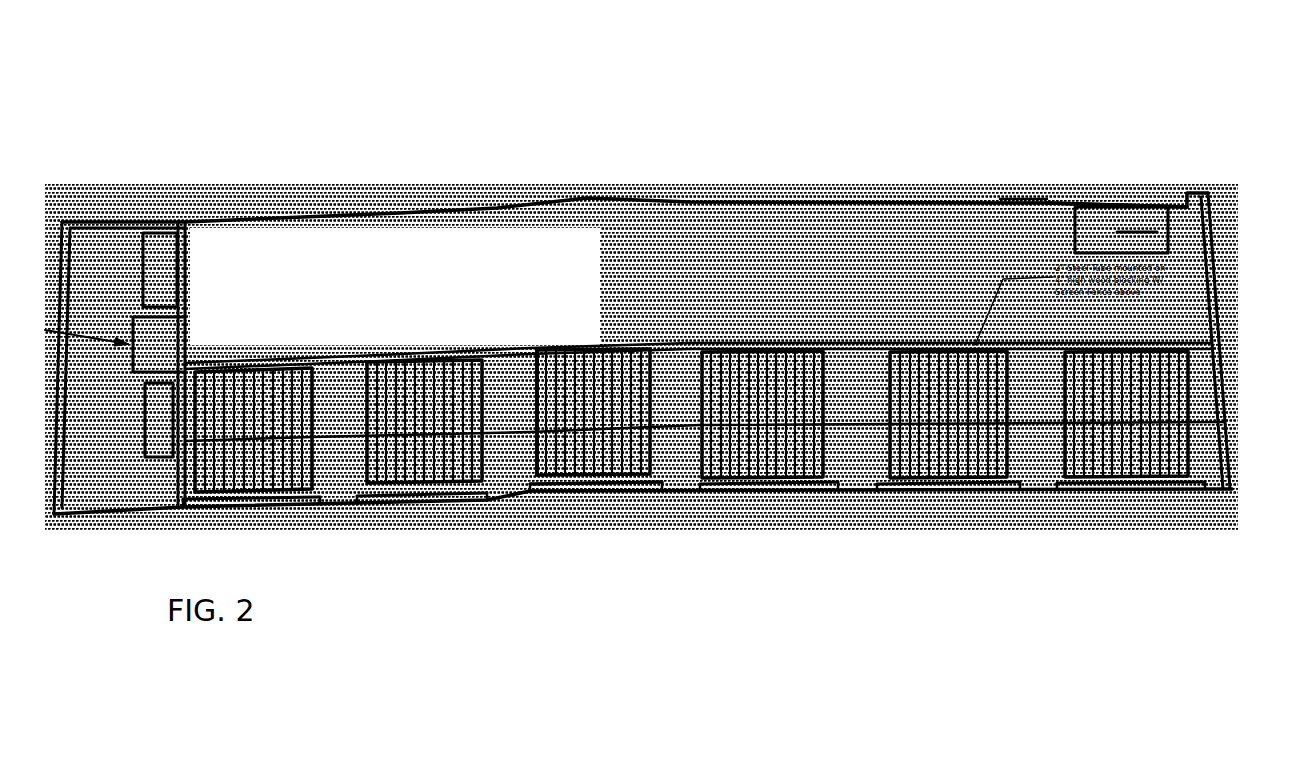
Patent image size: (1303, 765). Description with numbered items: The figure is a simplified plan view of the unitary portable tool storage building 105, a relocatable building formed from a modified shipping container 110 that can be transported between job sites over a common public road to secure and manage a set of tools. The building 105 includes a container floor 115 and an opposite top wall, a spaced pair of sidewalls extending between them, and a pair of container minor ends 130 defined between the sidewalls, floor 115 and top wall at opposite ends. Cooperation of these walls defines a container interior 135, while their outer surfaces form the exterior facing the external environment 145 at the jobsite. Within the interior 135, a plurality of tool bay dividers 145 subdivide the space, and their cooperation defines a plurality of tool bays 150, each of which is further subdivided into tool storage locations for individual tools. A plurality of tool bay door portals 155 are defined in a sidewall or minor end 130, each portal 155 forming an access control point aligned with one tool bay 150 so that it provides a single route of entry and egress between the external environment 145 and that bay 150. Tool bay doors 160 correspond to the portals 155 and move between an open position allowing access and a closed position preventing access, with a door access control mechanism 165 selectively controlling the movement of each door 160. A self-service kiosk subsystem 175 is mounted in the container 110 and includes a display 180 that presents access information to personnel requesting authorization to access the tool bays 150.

The unitary portable tool storage building 105 is at (486, 631).
The modified shipping container 110 is at (857, 196).
The container floor 115 is at (440, 276).
The container minor ends 130 is at (1220, 222).
The container interior 135 is at (667, 373).
The tool bay dividers 145 is at (537, 372).
The tool bays 150 is at (617, 463).
The tool bay door portals 155 is at (585, 503).
The tool bay doors 160 is at (536, 486).
The door access control mechanisms 165 is at (700, 490).
The self-service kiosk subsystem 175 is at (1113, 192).
The display 180 is at (1147, 230).